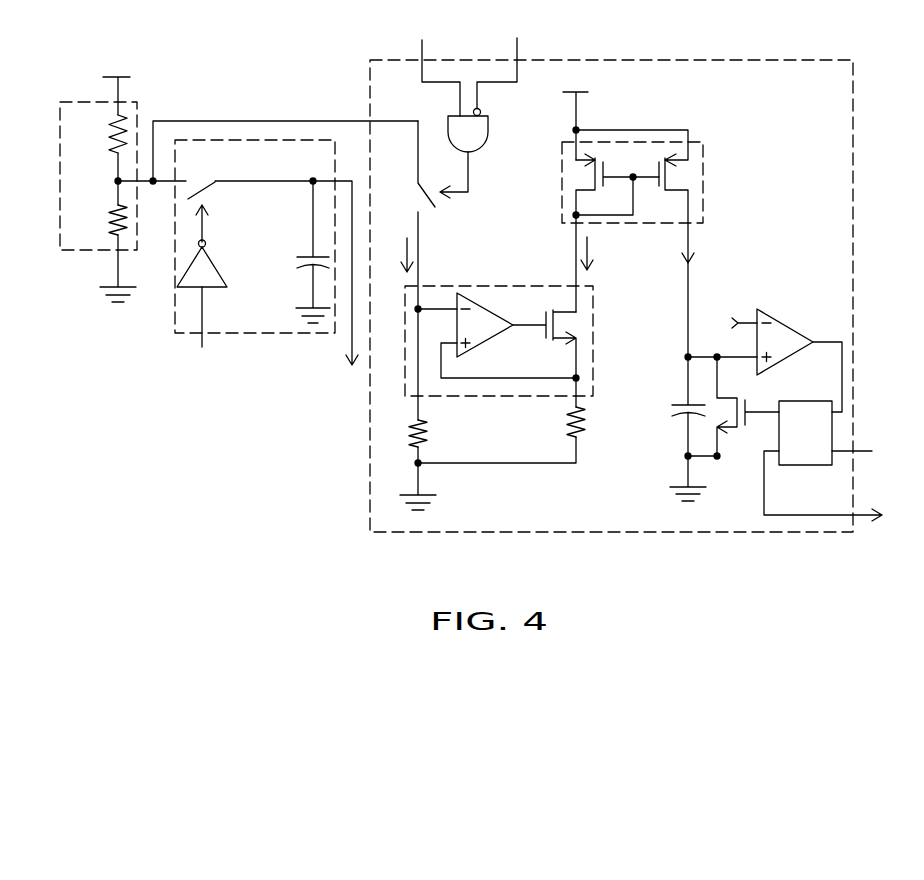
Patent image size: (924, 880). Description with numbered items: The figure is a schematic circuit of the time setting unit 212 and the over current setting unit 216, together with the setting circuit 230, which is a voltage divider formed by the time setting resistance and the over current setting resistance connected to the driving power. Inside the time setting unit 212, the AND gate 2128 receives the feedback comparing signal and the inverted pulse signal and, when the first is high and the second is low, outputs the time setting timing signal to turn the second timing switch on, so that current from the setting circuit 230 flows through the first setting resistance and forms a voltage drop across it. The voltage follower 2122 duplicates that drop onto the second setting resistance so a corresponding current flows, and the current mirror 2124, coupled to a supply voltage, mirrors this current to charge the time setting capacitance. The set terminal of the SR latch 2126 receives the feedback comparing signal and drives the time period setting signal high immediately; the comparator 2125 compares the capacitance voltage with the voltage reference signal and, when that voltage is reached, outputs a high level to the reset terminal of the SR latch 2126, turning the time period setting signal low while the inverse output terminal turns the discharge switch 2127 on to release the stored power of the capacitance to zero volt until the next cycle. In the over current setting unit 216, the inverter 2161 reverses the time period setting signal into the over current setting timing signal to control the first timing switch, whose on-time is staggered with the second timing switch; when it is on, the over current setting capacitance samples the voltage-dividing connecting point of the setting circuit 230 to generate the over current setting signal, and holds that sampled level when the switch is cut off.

The setting circuit 230 is at (100, 102).
The over current setting unit 216 is at (177, 307).
The inverter 2161 is at (212, 277).
The time setting unit 212 is at (372, 92).
The AND gate 2128 is at (487, 128).
The current mirror 2124 is at (699, 151).
The voltage follower 2122 is at (547, 285).
The comparator 2125 is at (768, 323).
The discharge switch 2127 is at (730, 428).
The SR latch 2126 is at (803, 465).